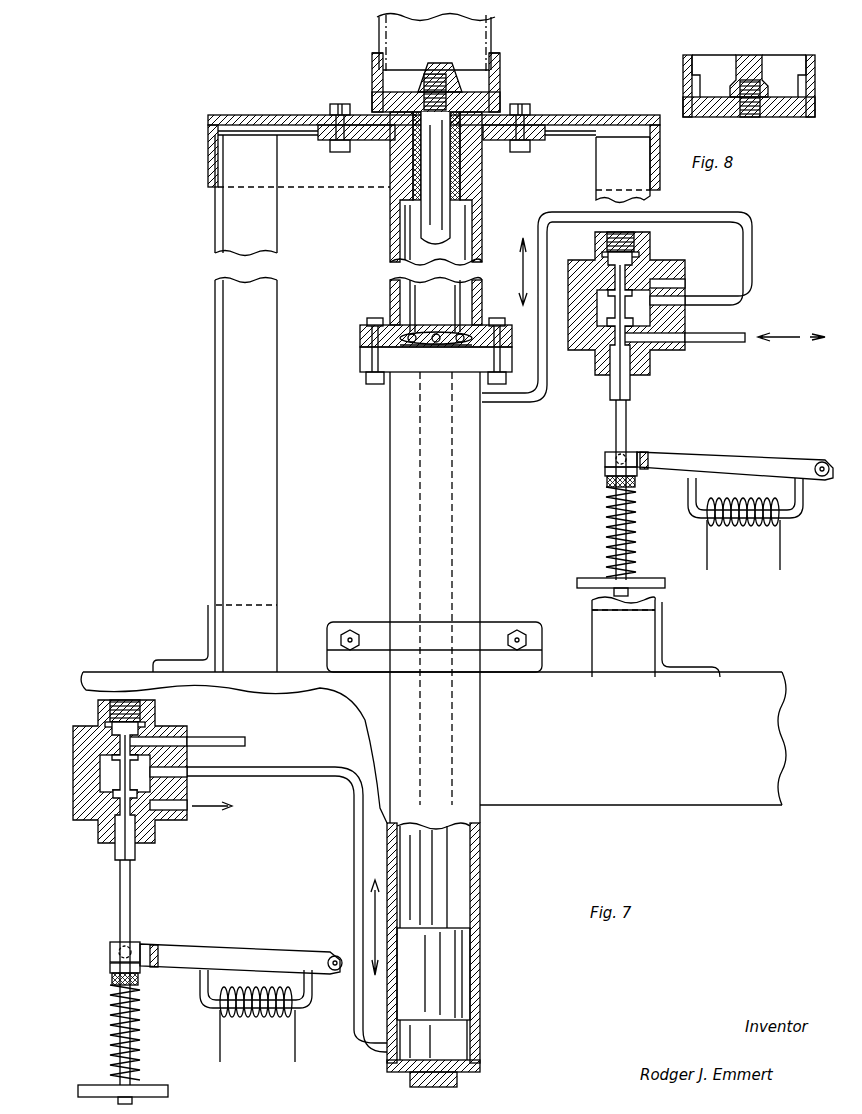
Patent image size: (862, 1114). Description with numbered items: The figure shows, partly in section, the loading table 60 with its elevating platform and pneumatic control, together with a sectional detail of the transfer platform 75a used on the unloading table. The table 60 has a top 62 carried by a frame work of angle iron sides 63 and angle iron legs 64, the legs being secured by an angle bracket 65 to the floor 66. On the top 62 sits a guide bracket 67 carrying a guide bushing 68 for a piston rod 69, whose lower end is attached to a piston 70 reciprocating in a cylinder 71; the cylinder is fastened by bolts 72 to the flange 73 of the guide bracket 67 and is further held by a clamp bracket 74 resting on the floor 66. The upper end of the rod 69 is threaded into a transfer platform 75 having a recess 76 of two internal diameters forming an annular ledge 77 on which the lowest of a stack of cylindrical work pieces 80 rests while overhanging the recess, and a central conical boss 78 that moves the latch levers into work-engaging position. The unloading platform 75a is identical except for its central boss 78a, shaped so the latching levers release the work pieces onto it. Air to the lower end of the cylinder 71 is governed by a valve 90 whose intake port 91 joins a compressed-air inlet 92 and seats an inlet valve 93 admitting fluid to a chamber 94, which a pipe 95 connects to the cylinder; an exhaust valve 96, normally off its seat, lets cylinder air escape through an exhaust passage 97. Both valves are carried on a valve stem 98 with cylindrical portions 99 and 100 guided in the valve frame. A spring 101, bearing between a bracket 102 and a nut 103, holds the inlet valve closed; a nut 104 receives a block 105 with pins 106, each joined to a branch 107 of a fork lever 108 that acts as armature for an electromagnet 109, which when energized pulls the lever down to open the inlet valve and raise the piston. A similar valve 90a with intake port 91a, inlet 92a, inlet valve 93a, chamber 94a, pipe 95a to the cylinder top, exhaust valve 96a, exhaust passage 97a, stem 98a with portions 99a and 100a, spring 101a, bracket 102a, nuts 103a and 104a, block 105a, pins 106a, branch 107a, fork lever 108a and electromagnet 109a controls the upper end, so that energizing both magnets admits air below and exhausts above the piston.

In FIG. 7, the loading table 60 is at (150, 234).
In FIG. 7, the top 62 is at (217, 124).
In FIG. 7, the angle iron sides 63 is at (208, 160).
In FIG. 7, the angle iron legs 64 is at (216, 351).
In FIG. 7, the angle bracket 65 is at (208, 622).
In FIG. 7, the floor 66 is at (752, 674).
In FIG. 7, the guide bracket 67 is at (336, 112).
In FIG. 7, the guide bushing 68 is at (414, 150).
In FIG. 7, the piston rod 69 is at (430, 182).
In FIG. 7, the piston 70 is at (445, 956).
In FIG. 7, the cylinder 71 is at (481, 852).
In FIG. 7, the bolts 72 is at (410, 322).
In FIG. 7, the flange 73 is at (360, 337).
In FIG. 7, the clamp bracket 74 is at (500, 622).
In FIG. 7, the transfer platform 75 is at (500, 76).
In FIG. 7, the recess 76 is at (406, 62).
In FIG. 7, the annular ledge 77 is at (372, 52).
In FIG. 7, the conical boss 78 is at (452, 72).
In FIG. 7, the cylindrical work pieces 80 is at (494, 27).
In FIG. 8, the transfer platform 75a is at (683, 70).
In FIG. 8, the central boss 78a is at (763, 64).
In FIG. 7, the valve 90 is at (73, 744).
In FIG. 7, the intake port 91 is at (170, 738).
In FIG. 7, the compressed-air inlet 92 is at (236, 737).
In FIG. 7, the inlet valve 93 is at (100, 777).
In FIG. 7, the chamber 94 is at (110, 790).
In FIG. 7, the pipe 95 is at (300, 778).
In FIG. 7, the exhaust valve 96 is at (96, 808).
In FIG. 7, the exhaust passage 97 is at (170, 816).
In FIG. 7, the valve stem 98 is at (120, 883).
In FIG. 7, the cylindrical portion 99 is at (118, 832).
In FIG. 7, the cylindrical portion 100 is at (118, 703).
In FIG. 7, the spring 101 is at (115, 1006).
In FIG. 7, the bracket 102 is at (95, 1079).
In FIG. 7, the nut 103 is at (112, 979).
In FIG. 7, the nut 104 is at (110, 966).
In FIG. 7, the block 105 is at (112, 944).
In FIG. 7, the pins 106 is at (135, 946).
In FIG. 7, the branch 107 is at (158, 947).
In FIG. 7, the fork lever 108 is at (190, 960).
In FIG. 7, the electromagnet 109 is at (262, 1016).
In FIG. 7, the valve 90a is at (595, 264).
In FIG. 7, the intake port 91a is at (676, 340).
In FIG. 7, the compressed-air inlet 92a is at (726, 343).
In FIG. 7, the inlet valve 93a is at (597, 299).
In FIG. 7, the chamber 94a is at (606, 323).
In FIG. 7, the pipe 95a is at (755, 264).
In FIG. 7, the exhaust valve 96a is at (597, 362).
In FIG. 7, the exhaust passage 97a is at (686, 284).
In FIG. 7, the valve stem 98a is at (615, 418).
In FIG. 7, the cylindrical portion 99a is at (633, 381).
In FIG. 7, the cylindrical portion 100a is at (632, 240).
In FIG. 7, the spring 101a is at (610, 536).
In FIG. 7, the bracket 102a is at (578, 591).
In FIG. 7, the nut 103a is at (606, 485).
In FIG. 7, the nut 104a is at (605, 473).
In FIG. 7, the block 105a is at (605, 459).
In FIG. 7, the pins 106a is at (632, 453).
In FIG. 7, the branch 107a is at (652, 457).
In FIG. 7, the fork lever 108a is at (740, 459).
In FIG. 7, the electromagnet 109a is at (750, 526).